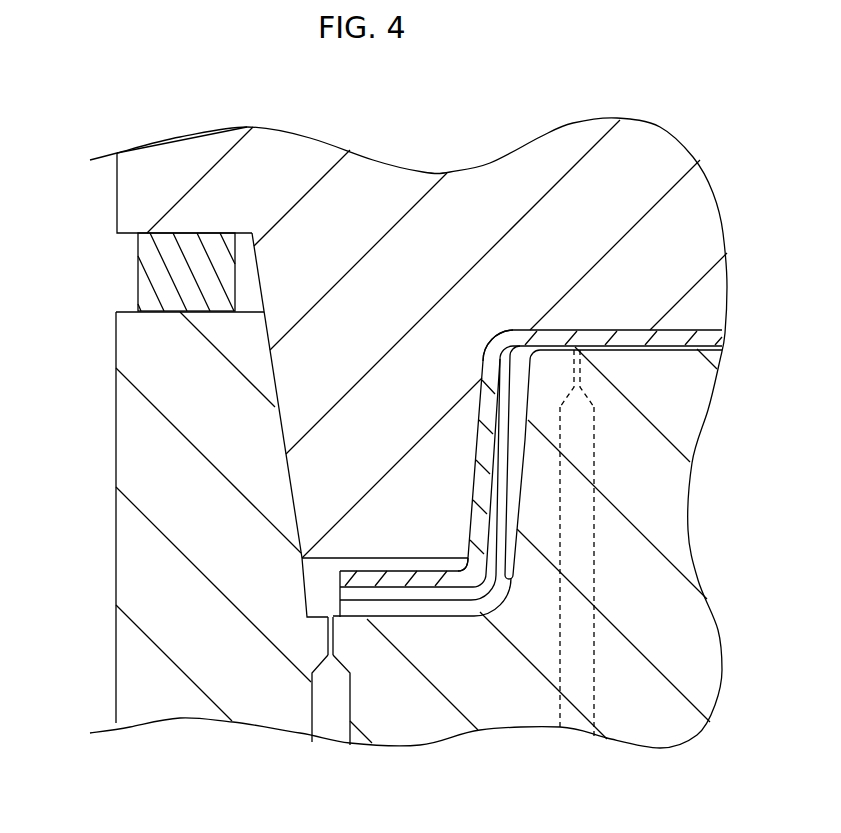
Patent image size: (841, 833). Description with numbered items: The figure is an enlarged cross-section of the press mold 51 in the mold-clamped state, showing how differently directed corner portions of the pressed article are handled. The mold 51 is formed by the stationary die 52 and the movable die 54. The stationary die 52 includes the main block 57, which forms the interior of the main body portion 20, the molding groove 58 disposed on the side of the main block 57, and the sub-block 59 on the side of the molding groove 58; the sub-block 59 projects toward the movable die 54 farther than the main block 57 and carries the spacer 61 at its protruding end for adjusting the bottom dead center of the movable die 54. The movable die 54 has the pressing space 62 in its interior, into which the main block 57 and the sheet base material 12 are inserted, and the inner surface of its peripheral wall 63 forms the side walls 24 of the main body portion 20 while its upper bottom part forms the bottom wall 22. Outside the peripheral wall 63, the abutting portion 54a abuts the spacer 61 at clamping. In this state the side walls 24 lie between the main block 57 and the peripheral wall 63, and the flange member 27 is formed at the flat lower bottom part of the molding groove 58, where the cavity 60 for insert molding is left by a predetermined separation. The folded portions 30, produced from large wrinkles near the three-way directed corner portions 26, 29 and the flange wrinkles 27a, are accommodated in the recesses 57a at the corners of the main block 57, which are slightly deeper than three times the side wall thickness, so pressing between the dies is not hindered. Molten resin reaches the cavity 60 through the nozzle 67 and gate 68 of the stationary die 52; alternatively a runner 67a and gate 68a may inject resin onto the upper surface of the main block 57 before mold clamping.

The movable die 54 is at (116, 184).
The press mold 51 is at (51, 309).
The abutting portion 54a is at (199, 148).
The spacer 61 is at (155, 269).
The peripheral wall 63 is at (310, 492).
The stationary die 52 is at (116, 386).
The sub-block 59 is at (135, 539).
The cavity 60 is at (313, 581).
The gate 68 is at (327, 633).
The nozzle 67 is at (338, 723).
The main body portion 20 is at (483, 352).
The sheet base material 12 is at (422, 377).
The bottom wall 22 is at (583, 345).
The three-way directed corner portion 26 is at (497, 335).
The side wall 24 is at (475, 479).
The flange member 27 is at (390, 570).
The three-way directed corner portion 29 is at (456, 565).
The folded portion 30 is at (392, 594).
The wrinkle 27a is at (378, 705).
The recess 57a is at (512, 577).
The molding groove 58 is at (423, 606).
The main block 57 is at (668, 524).
The pressing space 62 is at (675, 349).
The gate 68a is at (583, 379).
The runner 67a is at (572, 692).